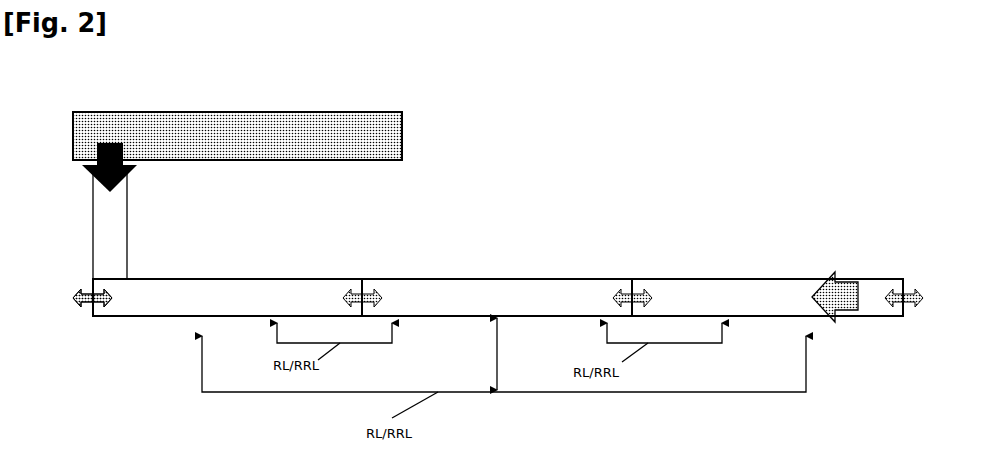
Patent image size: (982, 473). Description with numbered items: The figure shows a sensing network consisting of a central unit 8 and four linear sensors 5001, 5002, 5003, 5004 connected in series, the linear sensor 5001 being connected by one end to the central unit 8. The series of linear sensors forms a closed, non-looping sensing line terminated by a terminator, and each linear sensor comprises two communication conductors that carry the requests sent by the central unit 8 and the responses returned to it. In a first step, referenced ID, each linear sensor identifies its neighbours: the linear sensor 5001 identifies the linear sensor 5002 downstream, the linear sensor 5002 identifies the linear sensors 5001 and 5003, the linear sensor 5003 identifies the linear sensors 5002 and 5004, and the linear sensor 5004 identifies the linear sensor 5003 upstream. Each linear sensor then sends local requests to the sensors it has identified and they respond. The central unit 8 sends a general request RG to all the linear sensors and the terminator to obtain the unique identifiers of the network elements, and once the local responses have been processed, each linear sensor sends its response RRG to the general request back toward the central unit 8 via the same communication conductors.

The central unit 8 is at (287, 124).
The linear sensor 5001 is at (115, 219).
The linear sensor 5002 is at (307, 292).
The linear sensor 5003 is at (440, 283).
The linear sensor 5004 is at (682, 285).
The general request RG is at (93, 178).
The identification of upstream/downstream linear sensors ID is at (90, 303).
The response to the general request RRG is at (853, 283).